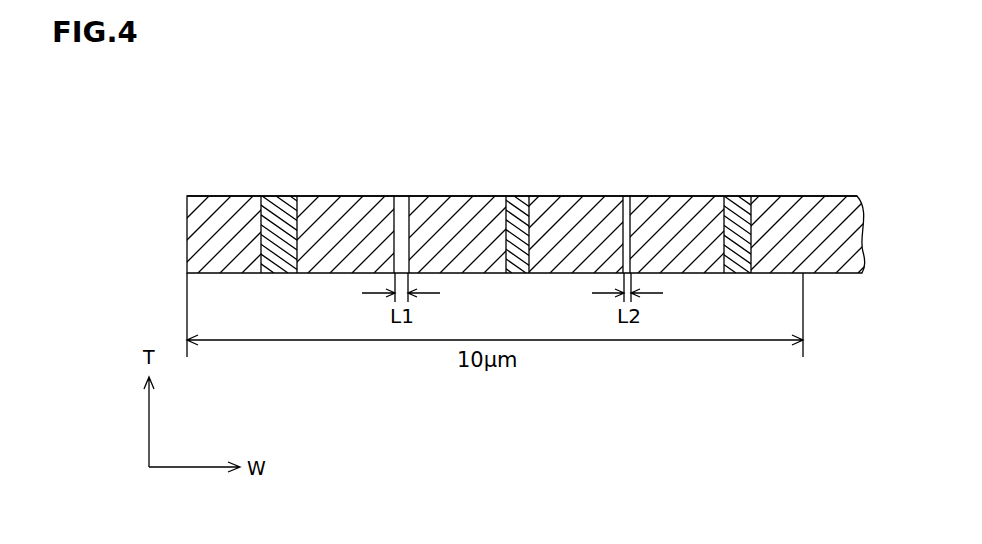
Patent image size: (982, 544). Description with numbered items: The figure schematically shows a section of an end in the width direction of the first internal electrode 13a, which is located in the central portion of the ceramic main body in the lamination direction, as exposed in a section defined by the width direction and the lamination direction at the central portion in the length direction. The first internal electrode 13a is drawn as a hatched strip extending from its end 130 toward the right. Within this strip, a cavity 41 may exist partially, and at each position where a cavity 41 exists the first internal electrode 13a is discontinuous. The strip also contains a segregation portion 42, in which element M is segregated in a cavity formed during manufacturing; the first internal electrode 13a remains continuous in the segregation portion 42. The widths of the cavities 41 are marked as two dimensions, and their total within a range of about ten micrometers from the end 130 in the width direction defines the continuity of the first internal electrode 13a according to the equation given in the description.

The end of first internal electrode 130 is at (187, 214).
The segregation portion 42 is at (278, 196).
The cavity 41 is at (403, 196).
The first internal electrode 13a is at (575, 196).